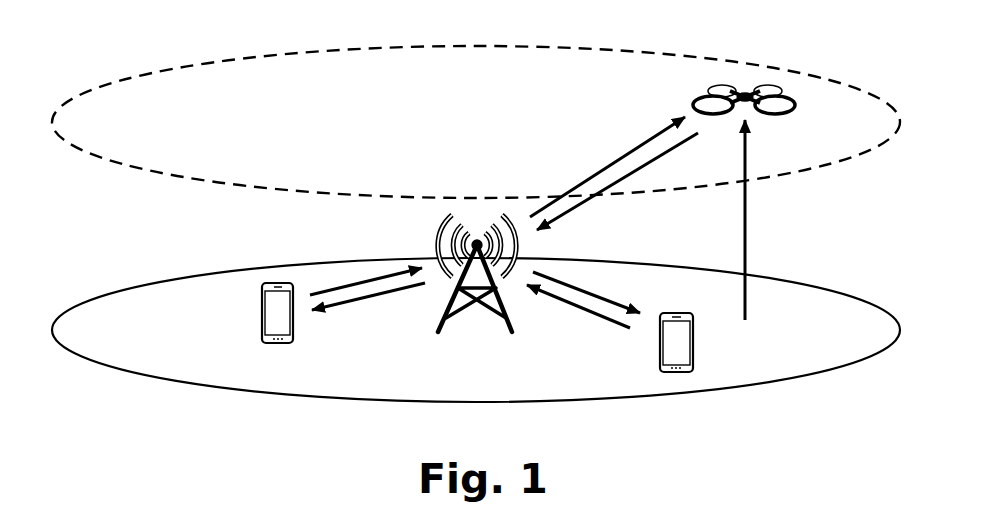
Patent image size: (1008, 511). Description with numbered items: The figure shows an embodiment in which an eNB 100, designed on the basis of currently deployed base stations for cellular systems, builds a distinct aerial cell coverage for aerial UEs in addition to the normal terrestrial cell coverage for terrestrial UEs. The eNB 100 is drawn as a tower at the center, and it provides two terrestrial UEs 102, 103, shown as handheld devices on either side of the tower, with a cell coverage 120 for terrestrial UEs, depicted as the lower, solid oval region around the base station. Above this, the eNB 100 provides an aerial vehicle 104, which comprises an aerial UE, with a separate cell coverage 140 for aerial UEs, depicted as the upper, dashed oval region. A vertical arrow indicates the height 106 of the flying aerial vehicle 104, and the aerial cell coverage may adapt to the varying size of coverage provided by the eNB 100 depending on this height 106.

The eNB 100 is at (493, 316).
The terrestrial UE 102 is at (660, 348).
The terrestrial UE 103 is at (262, 318).
The aerial vehicle 104 is at (785, 88).
The height 106 is at (745, 218).
The cell coverage for terrestrial UEs 120 is at (103, 294).
The cell coverage for aerial UEs 140 is at (90, 95).